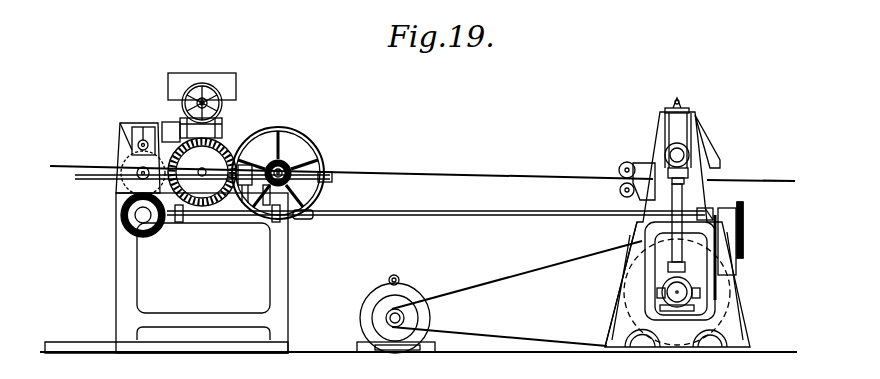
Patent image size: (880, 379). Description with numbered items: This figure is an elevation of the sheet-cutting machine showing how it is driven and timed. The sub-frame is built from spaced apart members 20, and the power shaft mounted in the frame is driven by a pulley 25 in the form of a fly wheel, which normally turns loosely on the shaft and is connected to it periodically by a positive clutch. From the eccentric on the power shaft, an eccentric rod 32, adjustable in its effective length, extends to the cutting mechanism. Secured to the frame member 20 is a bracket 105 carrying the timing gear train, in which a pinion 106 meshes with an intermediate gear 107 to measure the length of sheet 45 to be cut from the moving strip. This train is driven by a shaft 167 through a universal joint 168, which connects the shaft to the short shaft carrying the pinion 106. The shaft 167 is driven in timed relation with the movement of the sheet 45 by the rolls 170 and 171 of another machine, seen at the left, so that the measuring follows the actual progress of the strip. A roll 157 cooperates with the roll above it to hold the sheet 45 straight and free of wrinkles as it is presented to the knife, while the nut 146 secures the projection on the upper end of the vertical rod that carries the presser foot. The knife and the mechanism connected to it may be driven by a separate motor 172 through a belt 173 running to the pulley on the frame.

The spaced apart member of the sub-frame 20 is at (742, 314).
The pulley 25 is at (630, 278).
The eccentric rod 32 is at (652, 237).
The sheet 45 is at (496, 177).
The bracket 105 is at (737, 262).
The pinion 106 is at (744, 210).
The intermediate gear 107 is at (744, 232).
The nut 146 is at (620, 167).
The roll 157 is at (619, 189).
The shaft 167 is at (444, 211).
The universal joint 168 is at (709, 209).
The roll 170 is at (121, 152).
The roll 171 is at (121, 215).
The motor 172 is at (377, 290).
The belt 173 is at (533, 277).